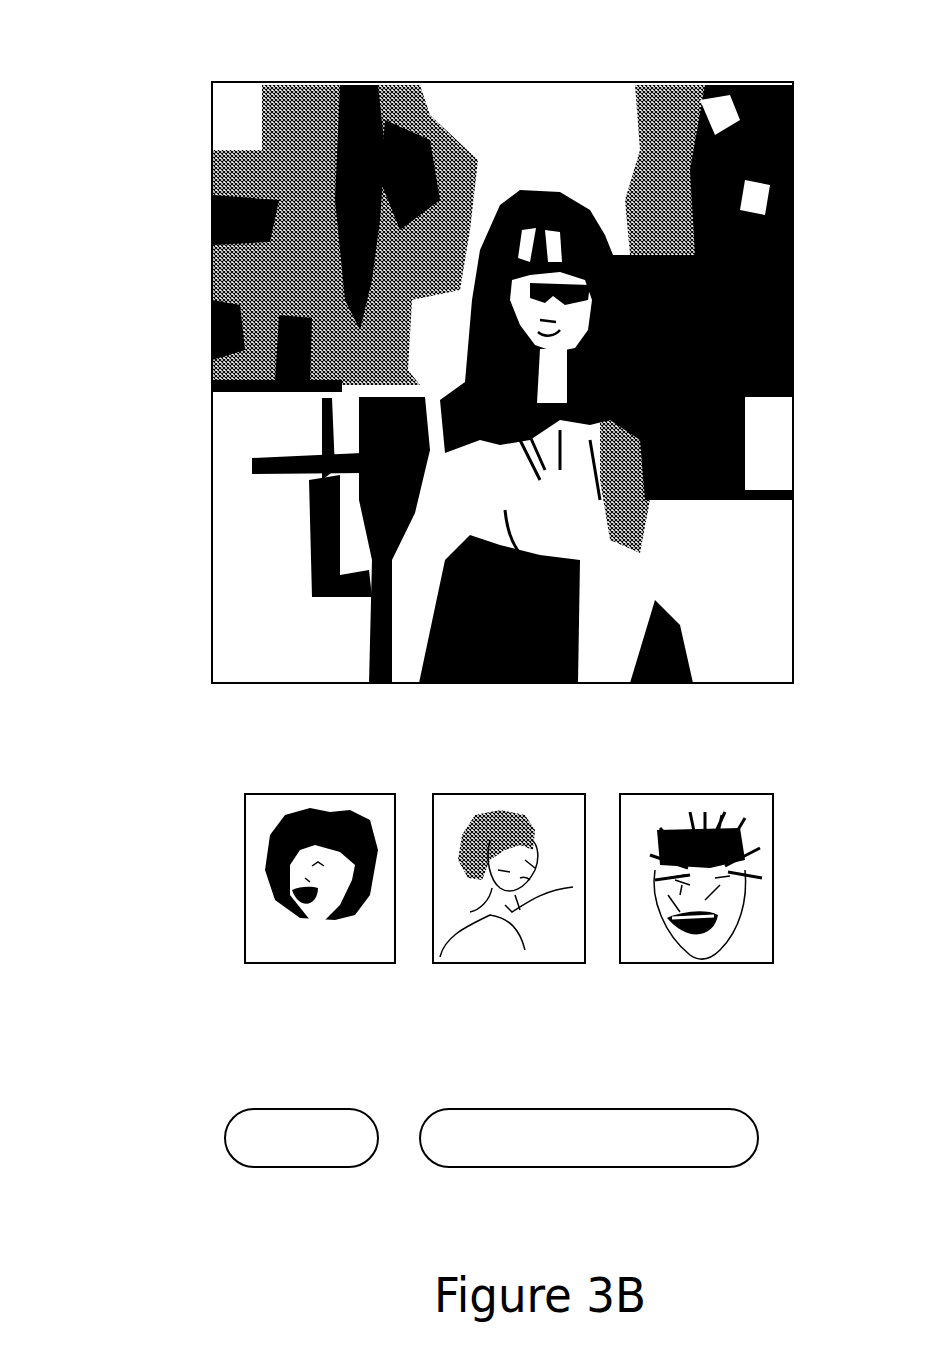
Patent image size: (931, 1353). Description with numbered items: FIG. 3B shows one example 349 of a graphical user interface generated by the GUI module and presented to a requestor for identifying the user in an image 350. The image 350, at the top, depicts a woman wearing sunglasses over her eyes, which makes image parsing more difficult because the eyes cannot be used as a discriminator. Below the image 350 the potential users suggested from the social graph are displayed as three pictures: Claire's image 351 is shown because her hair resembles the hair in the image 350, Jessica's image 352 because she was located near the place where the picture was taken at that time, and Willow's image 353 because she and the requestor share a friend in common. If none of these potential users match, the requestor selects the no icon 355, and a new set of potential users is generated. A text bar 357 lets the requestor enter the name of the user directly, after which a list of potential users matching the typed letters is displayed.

The example 349 is at (126, 84).
The image 350 is at (227, 82).
The Claire's image 351 is at (250, 963).
The Jessica's image 352 is at (437, 963).
The Willow's image 353 is at (624, 963).
The no icon 355 is at (255, 1167).
The text bar 357 is at (442, 1167).